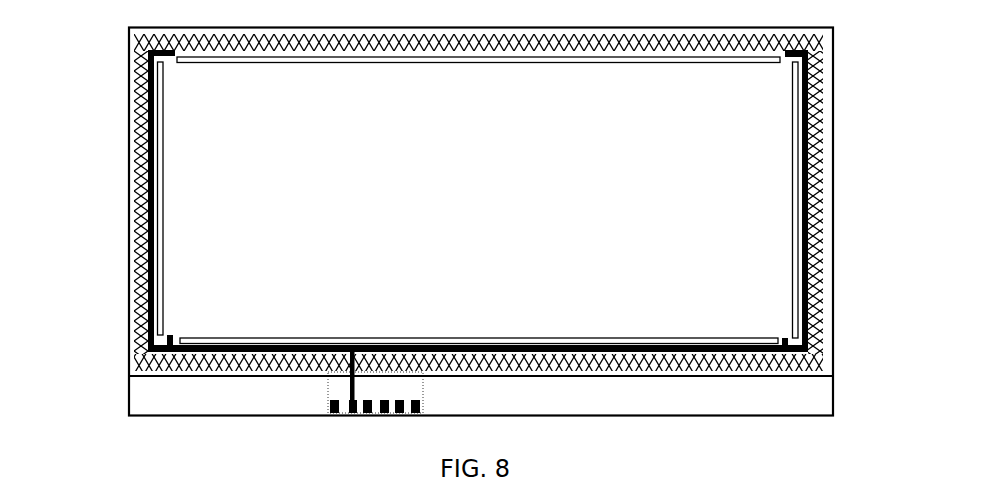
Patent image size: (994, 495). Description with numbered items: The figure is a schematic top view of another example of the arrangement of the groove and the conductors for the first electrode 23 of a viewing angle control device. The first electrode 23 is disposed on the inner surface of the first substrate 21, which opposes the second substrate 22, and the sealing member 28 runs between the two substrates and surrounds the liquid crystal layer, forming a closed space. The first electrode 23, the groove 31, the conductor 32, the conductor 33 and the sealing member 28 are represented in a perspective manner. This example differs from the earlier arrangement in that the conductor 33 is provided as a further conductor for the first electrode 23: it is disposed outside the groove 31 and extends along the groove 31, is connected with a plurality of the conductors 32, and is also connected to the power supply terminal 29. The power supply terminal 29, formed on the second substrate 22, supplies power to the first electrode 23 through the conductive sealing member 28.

The first substrate 21 is at (128, 78).
The second substrate 22 is at (128, 397).
The first electrode 23 is at (175, 298).
The sealing member 28 is at (142, 223).
The power supply terminal 29 is at (328, 408).
The groove 31 is at (162, 153).
The conductor 32 is at (810, 53).
The conductor 33 is at (808, 206).